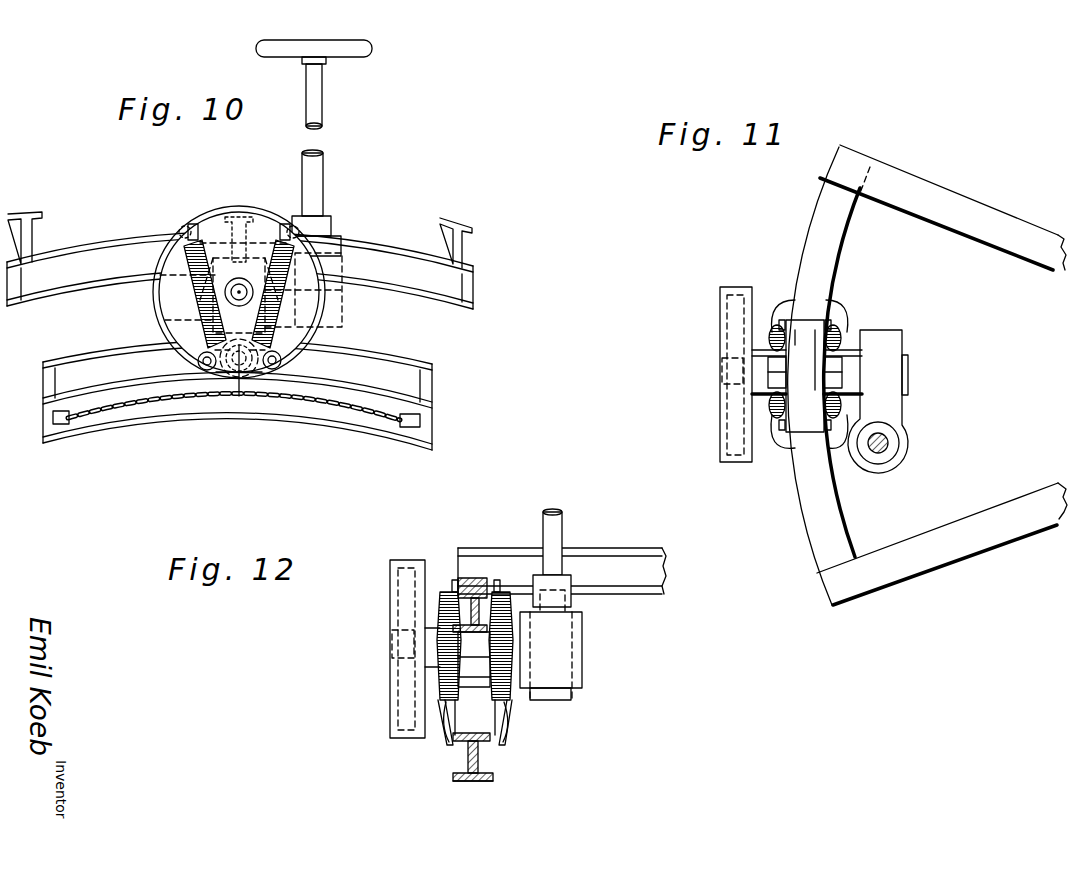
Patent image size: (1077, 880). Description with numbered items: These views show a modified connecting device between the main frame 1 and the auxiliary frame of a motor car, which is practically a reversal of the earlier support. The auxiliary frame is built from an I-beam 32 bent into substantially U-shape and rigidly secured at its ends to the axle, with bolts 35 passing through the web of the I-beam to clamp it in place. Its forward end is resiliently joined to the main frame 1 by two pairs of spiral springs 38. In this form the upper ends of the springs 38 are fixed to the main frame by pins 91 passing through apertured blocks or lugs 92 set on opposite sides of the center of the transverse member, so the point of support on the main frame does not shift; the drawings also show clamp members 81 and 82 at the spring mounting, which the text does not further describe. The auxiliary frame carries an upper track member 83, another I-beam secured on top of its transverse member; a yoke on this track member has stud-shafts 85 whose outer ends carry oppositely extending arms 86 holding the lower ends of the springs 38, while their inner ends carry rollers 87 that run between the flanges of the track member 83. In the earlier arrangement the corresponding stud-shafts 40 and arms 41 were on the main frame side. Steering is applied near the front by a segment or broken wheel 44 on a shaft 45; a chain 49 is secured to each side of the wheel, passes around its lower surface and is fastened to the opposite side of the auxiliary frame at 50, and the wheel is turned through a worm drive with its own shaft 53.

In FIG. 10, the rail 1 is at (452, 287).
In FIG. 11, the rail 1 is at (808, 222).
In FIG. 12, the rail 1 is at (470, 595).
In FIG. 12, the I-beam 32 is at (474, 782).
In FIG. 10, the bolts 35 is at (235, 294).
In FIG. 10, the spiral springs 38 is at (158, 294).
In FIG. 11, the spiral springs 38 is at (808, 376).
In FIG. 12, the spiral springs 38 is at (438, 660).
In FIG. 10, the stud-shafts 40 is at (240, 384).
In FIG. 10, the oppositely extending arms 41 is at (196, 360).
In FIG. 10, the segment or broken wheel 44 is at (162, 312).
In FIG. 11, the segment or broken wheel 44 is at (720, 413).
In FIG. 12, the segment or broken wheel 44 is at (390, 582).
In FIG. 10, the shaft 45 is at (239, 280).
In FIG. 11, the shaft 45 is at (722, 368).
In FIG. 12, the shaft 45 is at (392, 642).
In FIG. 10, the chain 49 is at (145, 408).
In FIG. 10, the chain connection point 50 is at (53, 418).
In FIG. 10, the shaft 53 is at (325, 176).
In FIG. 11, the shaft 53 is at (888, 443).
In FIG. 12, the shaft 53 is at (563, 530).
In FIG. 11, the clamp plate 81 is at (812, 345).
In FIG. 12, the clamp plate 81 is at (500, 590).
In FIG. 11, the clamp body 82 is at (790, 430).
In FIG. 12, the clamp body 82 is at (480, 586).
In FIG. 10, the track member 83 is at (375, 358).
In FIG. 12, the track member 83 is at (470, 750).
In FIG. 12, the stud-shafts 85 is at (442, 722).
In FIG. 12, the oppositely extending arms 86 is at (440, 700).
In FIG. 10, the rollers 87 is at (206, 392).
In FIG. 12, the rollers 87 is at (455, 725).
In FIG. 10, the pins 91 is at (193, 224).
In FIG. 10, the apertured blocks or lugs 92 is at (182, 228).